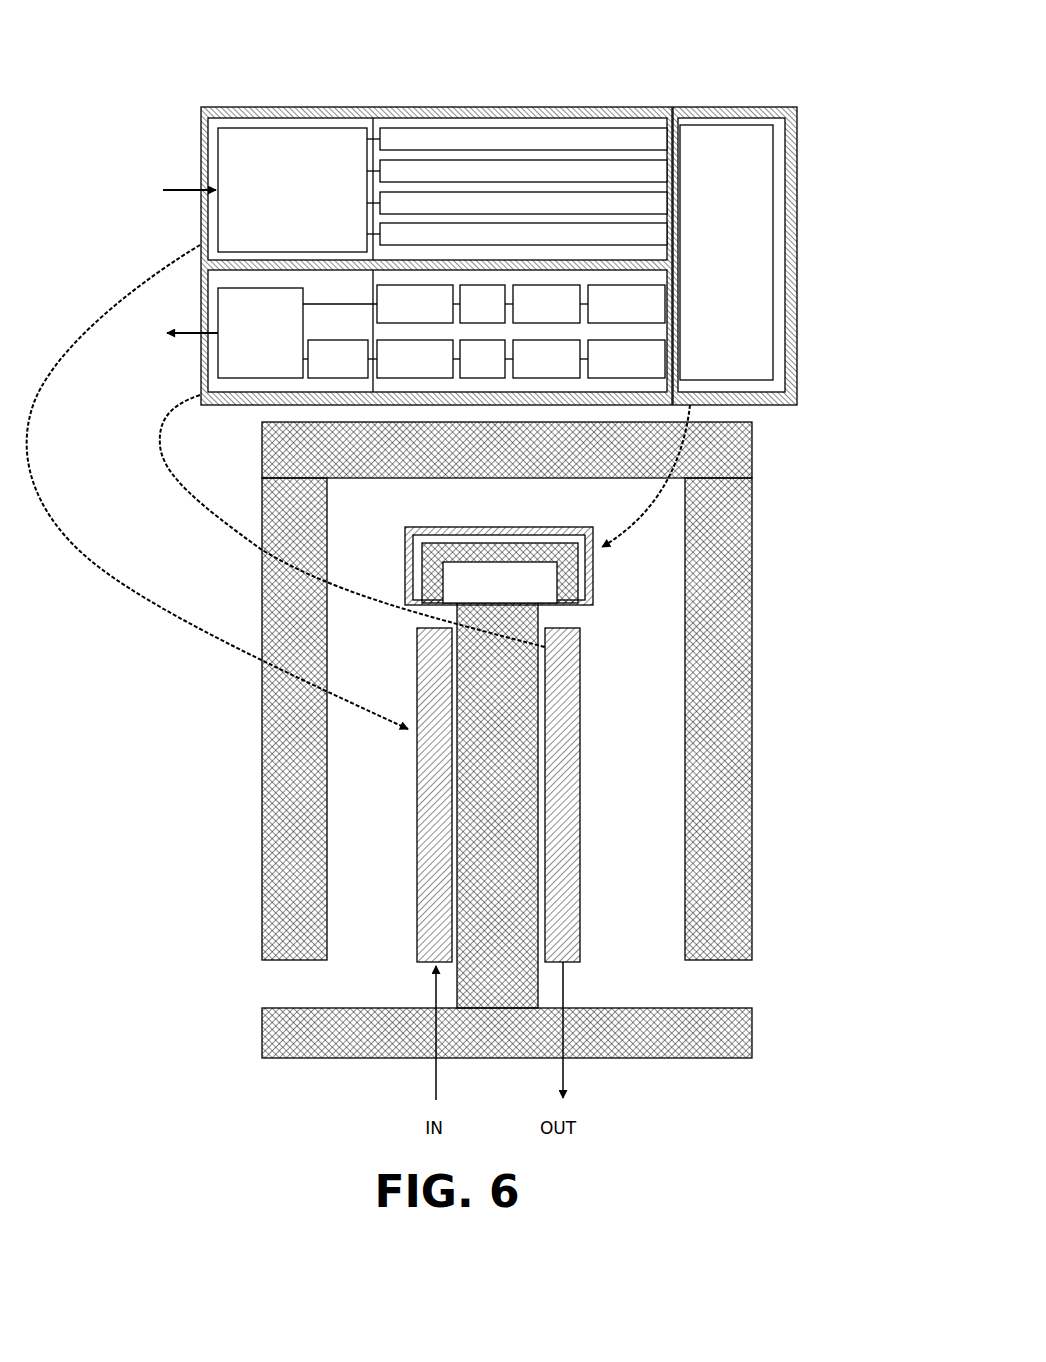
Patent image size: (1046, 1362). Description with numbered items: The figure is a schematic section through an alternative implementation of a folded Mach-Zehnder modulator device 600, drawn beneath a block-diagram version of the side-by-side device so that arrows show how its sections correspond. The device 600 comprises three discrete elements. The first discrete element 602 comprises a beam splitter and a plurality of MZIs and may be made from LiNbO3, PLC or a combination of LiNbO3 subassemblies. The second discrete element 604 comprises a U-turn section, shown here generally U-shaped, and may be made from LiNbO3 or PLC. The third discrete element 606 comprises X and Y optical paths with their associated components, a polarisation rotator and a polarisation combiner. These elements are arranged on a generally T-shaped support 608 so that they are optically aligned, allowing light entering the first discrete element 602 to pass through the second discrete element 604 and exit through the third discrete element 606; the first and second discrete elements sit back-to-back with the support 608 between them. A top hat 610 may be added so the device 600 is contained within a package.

The folded Mach-Zehnder modulator device 600 is at (145, 30).
The first discrete element 602 is at (108, 572).
The second discrete element 604 is at (432, 573).
The third discrete element 606 is at (158, 428).
The support 608 is at (520, 930).
The top hat 610 is at (262, 870).